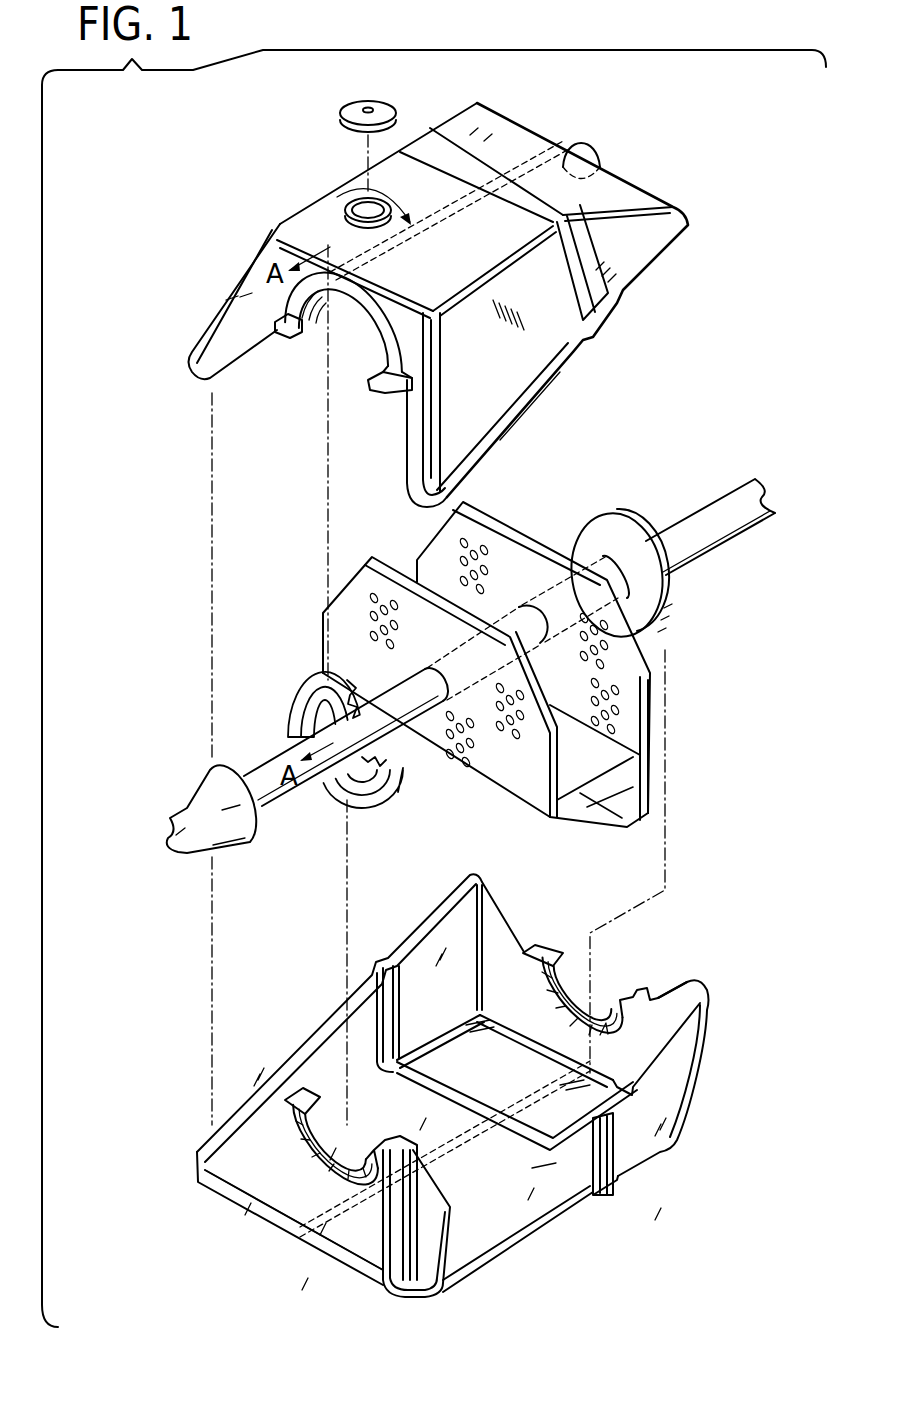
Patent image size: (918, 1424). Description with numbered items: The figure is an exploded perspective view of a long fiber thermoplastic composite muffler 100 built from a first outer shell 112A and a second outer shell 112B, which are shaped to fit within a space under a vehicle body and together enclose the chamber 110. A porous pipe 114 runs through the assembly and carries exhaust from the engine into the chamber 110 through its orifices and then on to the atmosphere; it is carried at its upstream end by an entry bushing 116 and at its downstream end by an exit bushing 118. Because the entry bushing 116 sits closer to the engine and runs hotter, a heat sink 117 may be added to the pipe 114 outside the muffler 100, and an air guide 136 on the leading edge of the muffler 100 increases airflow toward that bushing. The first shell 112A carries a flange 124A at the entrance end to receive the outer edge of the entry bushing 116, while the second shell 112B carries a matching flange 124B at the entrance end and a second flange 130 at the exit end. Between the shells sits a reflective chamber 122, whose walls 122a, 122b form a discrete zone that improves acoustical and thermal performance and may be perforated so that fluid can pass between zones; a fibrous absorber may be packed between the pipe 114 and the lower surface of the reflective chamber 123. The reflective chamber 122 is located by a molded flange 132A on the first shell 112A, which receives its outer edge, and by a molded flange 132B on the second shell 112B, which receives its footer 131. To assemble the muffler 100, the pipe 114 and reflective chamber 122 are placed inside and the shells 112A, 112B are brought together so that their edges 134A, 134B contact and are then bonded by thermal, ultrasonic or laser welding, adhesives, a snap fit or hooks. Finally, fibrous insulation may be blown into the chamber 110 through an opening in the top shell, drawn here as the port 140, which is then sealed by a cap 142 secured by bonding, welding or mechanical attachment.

The long fiber thermoplastic composite muffler 100 is at (160, 285).
The chamber 110 is at (514, 1088).
The first outer shell 112A is at (650, 338).
The second outer shell 112B is at (565, 1235).
The porous pipe 114 is at (713, 507).
The entry bushing 116 is at (367, 803).
The heat sink 117 is at (213, 783).
The exit bushing 118 is at (620, 516).
The reflective chamber 122 is at (400, 533).
The wall of reflective chamber 122a is at (350, 600).
The wall of reflective chamber 122b is at (525, 538).
The lower surface of reflective chamber 123 is at (597, 765).
The flange 124A is at (388, 350).
The flange 124B is at (330, 1128).
The second flange 130 is at (577, 1000).
The footer 131 is at (648, 790).
The molded flange 132A is at (598, 282).
The molded flange 132B is at (617, 1178).
The edge 134A is at (548, 371).
The edge 134B is at (695, 992).
The air guide 136 is at (343, 1240).
The opening 140 is at (355, 210).
The cap 142 is at (342, 110).